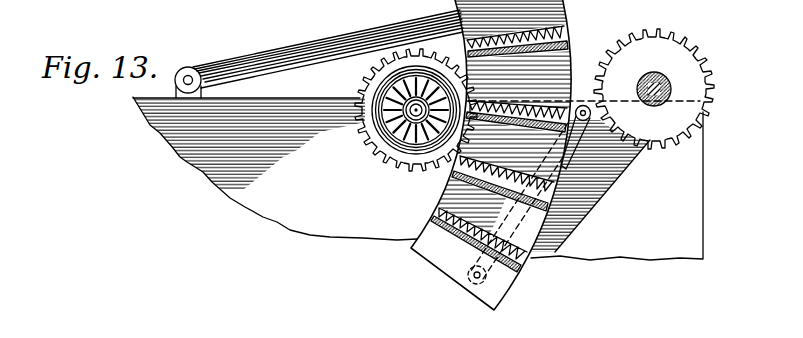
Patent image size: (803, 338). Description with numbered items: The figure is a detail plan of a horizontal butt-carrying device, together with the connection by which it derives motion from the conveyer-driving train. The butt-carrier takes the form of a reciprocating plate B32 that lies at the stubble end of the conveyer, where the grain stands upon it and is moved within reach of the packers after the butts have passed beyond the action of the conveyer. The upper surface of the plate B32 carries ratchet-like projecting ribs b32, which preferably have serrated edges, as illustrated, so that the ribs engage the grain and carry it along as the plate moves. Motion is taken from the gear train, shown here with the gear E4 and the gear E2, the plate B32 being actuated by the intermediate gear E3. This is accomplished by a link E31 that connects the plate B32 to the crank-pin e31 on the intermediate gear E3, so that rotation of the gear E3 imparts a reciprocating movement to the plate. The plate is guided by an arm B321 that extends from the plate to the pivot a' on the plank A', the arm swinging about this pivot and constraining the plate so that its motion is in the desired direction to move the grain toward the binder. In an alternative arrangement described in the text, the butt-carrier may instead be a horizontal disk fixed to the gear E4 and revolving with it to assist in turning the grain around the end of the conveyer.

The plank A' is at (418, 178).
The pivot a' is at (201, 70).
The arm B321 is at (302, 45).
The gear E4 is at (416, 110).
The reciprocating plate B32 is at (566, 225).
The ratchet-like projecting ribs b32 is at (503, 142).
The gear E2 is at (654, 89).
The link E31 is at (562, 132).
The intermediate gear E3 is at (573, 82).
The crank-pin e31 is at (589, 107).